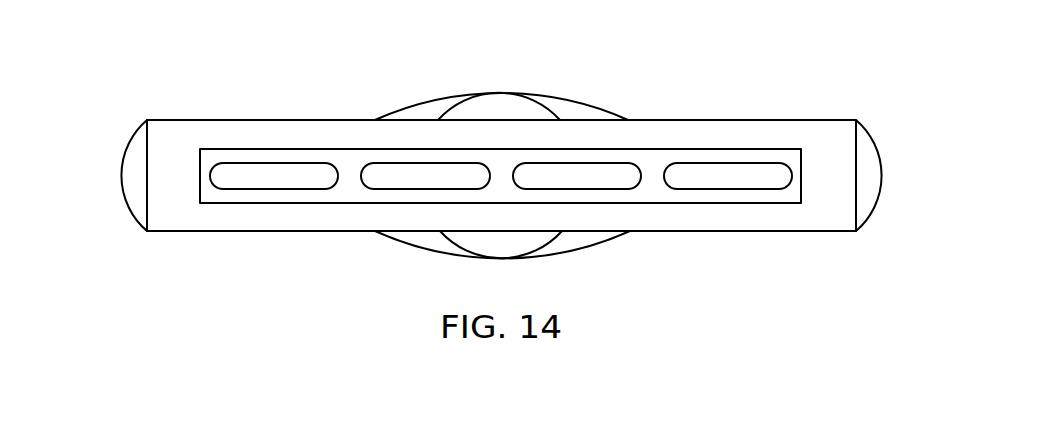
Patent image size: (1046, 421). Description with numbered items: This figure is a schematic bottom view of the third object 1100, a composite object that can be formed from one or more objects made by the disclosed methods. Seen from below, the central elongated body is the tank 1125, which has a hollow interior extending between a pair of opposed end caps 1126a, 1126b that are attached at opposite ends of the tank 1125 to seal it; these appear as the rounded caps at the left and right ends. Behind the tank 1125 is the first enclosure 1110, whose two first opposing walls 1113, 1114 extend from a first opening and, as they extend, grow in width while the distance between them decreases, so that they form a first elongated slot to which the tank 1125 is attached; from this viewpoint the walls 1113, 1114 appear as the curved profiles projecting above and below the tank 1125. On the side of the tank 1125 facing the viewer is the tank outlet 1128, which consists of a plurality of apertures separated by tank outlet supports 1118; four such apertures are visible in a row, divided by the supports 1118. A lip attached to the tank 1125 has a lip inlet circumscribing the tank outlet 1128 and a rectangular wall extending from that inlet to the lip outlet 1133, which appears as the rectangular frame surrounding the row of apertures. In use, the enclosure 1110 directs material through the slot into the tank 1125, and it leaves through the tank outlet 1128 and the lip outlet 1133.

The third object 1100 is at (807, 83).
The first enclosure 1110 is at (513, 107).
The first opposing wall 1113 is at (413, 110).
The first opposing wall 1114 is at (420, 243).
The tank outlet supports 1118 is at (652, 175).
The tank 1125 is at (168, 232).
The end cap 1126a is at (140, 148).
The end cap 1126b is at (865, 150).
The tank outlet 1128 is at (743, 175).
The lip outlet 1133 is at (273, 195).